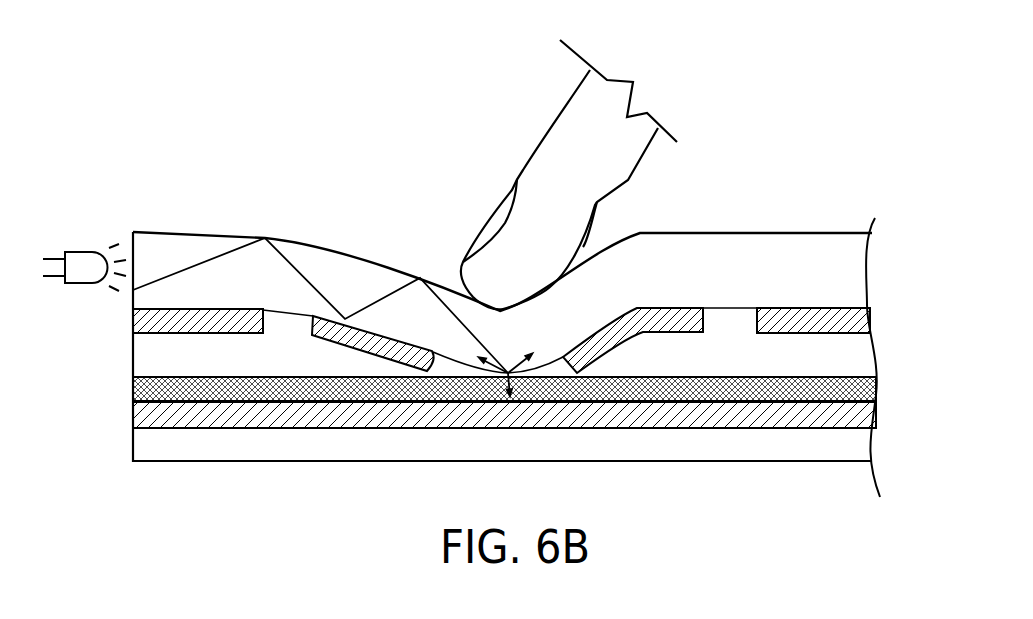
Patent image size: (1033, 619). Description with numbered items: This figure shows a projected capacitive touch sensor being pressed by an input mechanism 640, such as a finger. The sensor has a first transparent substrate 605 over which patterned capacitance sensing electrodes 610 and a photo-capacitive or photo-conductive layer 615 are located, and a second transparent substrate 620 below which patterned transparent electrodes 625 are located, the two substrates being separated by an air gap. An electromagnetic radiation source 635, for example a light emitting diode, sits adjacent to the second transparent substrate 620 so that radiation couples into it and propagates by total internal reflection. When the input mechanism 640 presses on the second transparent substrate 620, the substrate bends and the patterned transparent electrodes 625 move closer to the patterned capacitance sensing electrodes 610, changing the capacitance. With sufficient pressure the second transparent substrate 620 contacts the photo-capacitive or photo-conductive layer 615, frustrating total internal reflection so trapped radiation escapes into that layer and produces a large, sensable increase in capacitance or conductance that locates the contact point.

The first transparent substrate 605 is at (847, 455).
The patterned capacitance sensing electrodes 610 is at (873, 418).
The photo-capacitive or photo-conductive layer 615 is at (878, 388).
The second transparent substrate 620 is at (868, 262).
The patterned transparent electrodes 625 is at (830, 333).
The electromagnetic radiation source 635 is at (85, 260).
The input mechanism 640 is at (595, 102).